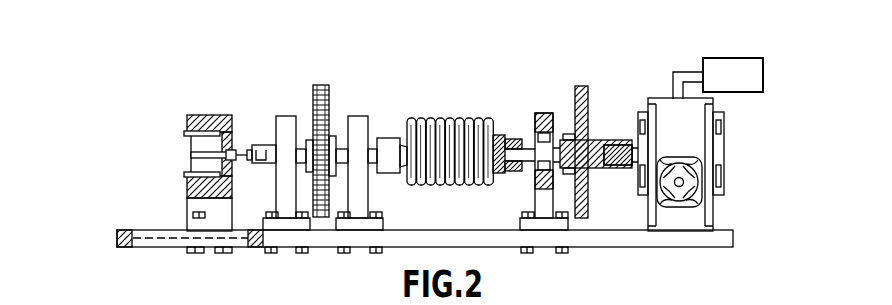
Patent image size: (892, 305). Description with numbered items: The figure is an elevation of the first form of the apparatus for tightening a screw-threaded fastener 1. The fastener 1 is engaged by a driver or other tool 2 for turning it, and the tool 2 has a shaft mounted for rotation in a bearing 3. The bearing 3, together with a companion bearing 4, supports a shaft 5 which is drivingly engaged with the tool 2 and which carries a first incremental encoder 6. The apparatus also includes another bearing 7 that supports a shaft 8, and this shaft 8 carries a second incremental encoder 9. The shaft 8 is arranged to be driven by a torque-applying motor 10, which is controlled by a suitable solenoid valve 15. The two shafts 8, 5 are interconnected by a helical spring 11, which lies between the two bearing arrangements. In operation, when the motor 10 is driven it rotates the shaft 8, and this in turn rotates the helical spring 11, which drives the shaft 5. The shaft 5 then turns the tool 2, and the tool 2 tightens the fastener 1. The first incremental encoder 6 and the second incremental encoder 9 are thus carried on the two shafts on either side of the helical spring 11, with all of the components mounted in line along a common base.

The screw-threaded fastener 1 is at (233, 143).
The driver or other tool 2 is at (252, 145).
The bearing 3 is at (283, 140).
The companion bearing 4 is at (358, 127).
The shaft 5 is at (303, 147).
The first incremental encoder 6 is at (324, 88).
The bearing 7 is at (538, 120).
The shaft 8 is at (528, 148).
The second incremental encoder 9 is at (587, 117).
The torque-applying motor 10 is at (677, 128).
The helical spring 11 is at (440, 133).
The solenoid valve 15 is at (738, 73).